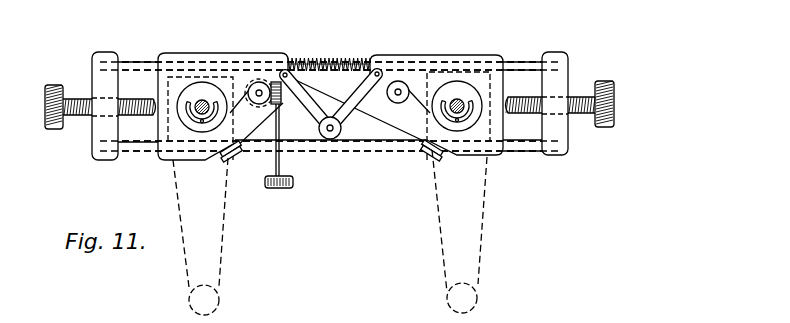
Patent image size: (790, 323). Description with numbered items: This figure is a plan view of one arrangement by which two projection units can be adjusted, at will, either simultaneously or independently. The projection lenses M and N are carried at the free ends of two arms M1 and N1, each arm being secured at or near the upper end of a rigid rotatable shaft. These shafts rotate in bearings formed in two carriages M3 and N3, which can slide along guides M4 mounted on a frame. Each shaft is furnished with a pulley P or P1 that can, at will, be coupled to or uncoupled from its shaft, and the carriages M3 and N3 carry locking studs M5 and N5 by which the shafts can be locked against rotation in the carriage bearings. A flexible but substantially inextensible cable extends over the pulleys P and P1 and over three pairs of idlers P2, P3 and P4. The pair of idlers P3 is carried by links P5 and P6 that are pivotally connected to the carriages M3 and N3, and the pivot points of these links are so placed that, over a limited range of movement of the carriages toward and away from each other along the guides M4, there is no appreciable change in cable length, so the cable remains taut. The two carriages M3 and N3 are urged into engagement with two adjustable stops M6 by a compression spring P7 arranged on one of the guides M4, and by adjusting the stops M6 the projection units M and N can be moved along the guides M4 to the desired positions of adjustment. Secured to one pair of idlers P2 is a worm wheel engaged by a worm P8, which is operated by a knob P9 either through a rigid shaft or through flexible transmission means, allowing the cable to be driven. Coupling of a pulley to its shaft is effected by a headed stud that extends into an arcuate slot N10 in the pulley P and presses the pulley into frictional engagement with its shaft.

The projection lens M is at (219, 303).
The arm M1 is at (223, 268).
The carriage M3 is at (220, 54).
The guides M4 is at (537, 145).
The locking stud M5 is at (234, 158).
The adjustable stops M6 is at (579, 93).
The projection lens N is at (477, 298).
The arm N1 is at (478, 258).
The carriage N3 is at (447, 56).
The locking stud N5 is at (425, 162).
The arcuate slot N10 is at (452, 120).
The pulley P is at (200, 102).
The pulley P1 is at (474, 118).
The pair of idlers P2 is at (258, 83).
The pair of idlers P3 is at (339, 137).
The pair of idlers P4 is at (397, 84).
The link P5 is at (326, 139).
The link P6 is at (365, 112).
The compression spring P7 is at (318, 58).
The worm P8 is at (281, 96).
The knob P9 is at (283, 189).